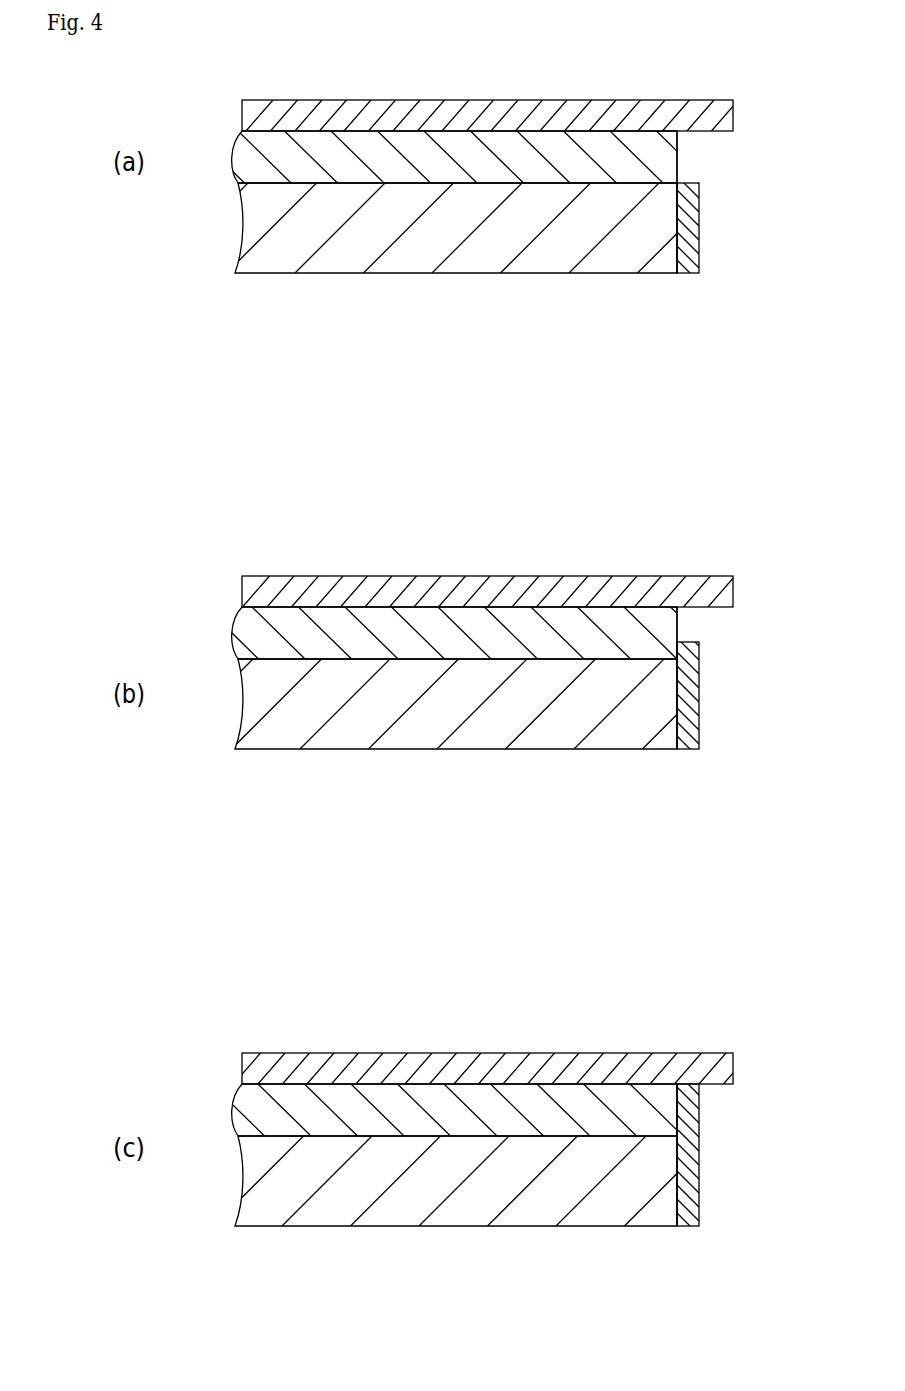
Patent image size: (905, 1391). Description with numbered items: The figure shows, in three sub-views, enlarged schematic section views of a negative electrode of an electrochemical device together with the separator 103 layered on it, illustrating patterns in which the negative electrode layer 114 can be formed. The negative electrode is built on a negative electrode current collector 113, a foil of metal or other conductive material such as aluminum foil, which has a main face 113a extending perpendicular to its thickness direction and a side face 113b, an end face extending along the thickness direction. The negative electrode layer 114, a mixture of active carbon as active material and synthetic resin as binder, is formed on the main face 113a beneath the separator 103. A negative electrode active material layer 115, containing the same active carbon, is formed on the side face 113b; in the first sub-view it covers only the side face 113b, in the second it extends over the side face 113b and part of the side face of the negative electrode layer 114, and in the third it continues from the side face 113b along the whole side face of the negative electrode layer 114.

The separator 103 is at (473, 116).
The negative electrode layer 114 is at (548, 146).
The negative electrode current collector 113 is at (472, 268).
The main face 113a is at (631, 181).
The side face 113b is at (688, 262).
The negative electrode active material layer 115 is at (687, 222).